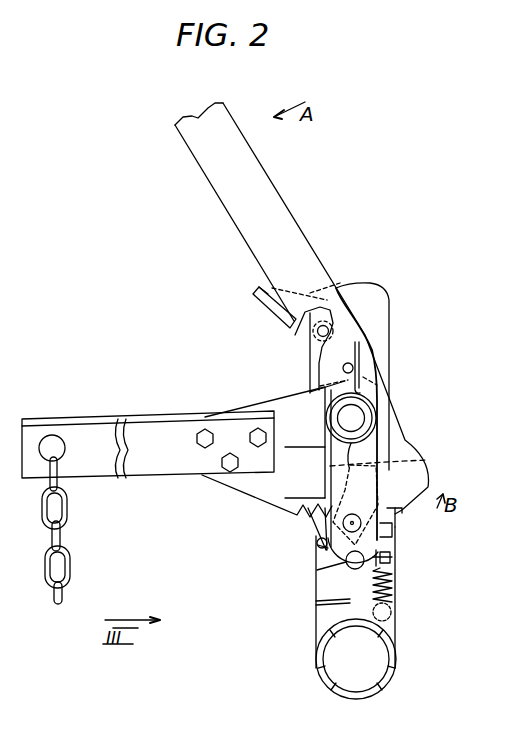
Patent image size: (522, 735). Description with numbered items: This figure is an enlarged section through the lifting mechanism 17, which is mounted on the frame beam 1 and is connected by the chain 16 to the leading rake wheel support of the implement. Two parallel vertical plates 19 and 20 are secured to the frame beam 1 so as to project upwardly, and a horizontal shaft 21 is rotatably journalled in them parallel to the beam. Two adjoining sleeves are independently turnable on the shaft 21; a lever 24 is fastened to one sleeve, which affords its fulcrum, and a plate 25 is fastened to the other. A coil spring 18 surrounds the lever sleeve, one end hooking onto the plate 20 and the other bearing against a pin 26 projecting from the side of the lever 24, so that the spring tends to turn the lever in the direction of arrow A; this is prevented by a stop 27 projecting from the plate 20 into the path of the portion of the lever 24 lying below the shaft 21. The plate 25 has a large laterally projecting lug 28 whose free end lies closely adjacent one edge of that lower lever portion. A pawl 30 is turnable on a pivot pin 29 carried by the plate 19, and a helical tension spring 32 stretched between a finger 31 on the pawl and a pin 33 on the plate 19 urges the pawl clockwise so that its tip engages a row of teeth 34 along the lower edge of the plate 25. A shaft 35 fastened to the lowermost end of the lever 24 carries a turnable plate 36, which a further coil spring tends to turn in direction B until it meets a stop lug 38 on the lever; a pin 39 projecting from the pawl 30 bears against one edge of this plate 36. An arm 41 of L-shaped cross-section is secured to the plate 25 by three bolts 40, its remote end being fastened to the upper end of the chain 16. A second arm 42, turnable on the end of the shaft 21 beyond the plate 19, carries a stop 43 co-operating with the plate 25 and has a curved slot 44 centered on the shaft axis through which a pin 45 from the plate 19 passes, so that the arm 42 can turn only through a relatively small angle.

The frame beam 1 is at (326, 683).
The chain 16 is at (70, 580).
The lifting mechanism 17 is at (216, 488).
The coil spring 18 is at (362, 382).
The vertical plate 19 is at (388, 314).
The vertical plate 20 is at (316, 632).
The horizontal shaft 21 is at (358, 418).
The lever 24 is at (216, 189).
The plate 25 is at (222, 412).
The pin 26 is at (345, 380).
The stop 27 is at (398, 531).
The laterally projecting lug 28 is at (300, 483).
The pivot pin 29 is at (346, 576).
The pawl 30 is at (317, 570).
The finger 31 is at (392, 557).
The helical tension spring 32 is at (393, 586).
The pin 33 is at (395, 618).
The row of teeth 34 is at (393, 523).
The shaft 35 is at (360, 506).
The plate 36 is at (317, 541).
The stop lug 38 is at (392, 462).
The pin 39 is at (318, 546).
The bolts 40 is at (204, 444).
The arm 41 is at (117, 412).
The second arm 42 is at (290, 331).
The stop 43 is at (256, 296).
The slot 44 is at (307, 340).
The pin 45 is at (320, 353).